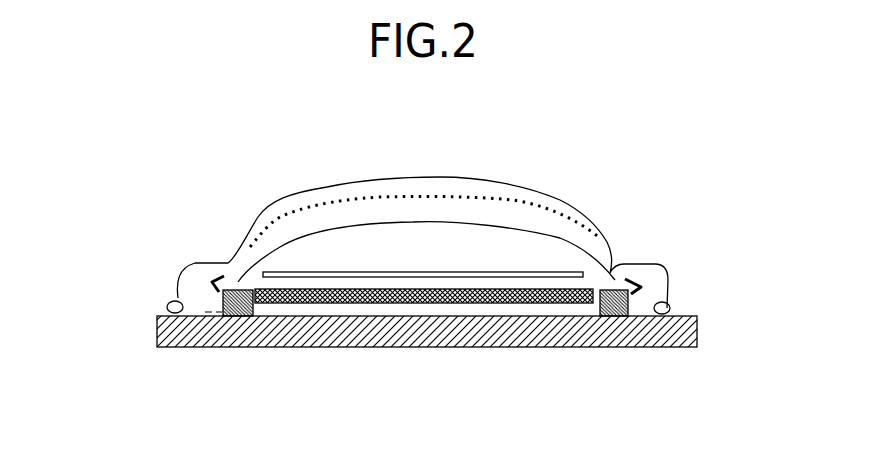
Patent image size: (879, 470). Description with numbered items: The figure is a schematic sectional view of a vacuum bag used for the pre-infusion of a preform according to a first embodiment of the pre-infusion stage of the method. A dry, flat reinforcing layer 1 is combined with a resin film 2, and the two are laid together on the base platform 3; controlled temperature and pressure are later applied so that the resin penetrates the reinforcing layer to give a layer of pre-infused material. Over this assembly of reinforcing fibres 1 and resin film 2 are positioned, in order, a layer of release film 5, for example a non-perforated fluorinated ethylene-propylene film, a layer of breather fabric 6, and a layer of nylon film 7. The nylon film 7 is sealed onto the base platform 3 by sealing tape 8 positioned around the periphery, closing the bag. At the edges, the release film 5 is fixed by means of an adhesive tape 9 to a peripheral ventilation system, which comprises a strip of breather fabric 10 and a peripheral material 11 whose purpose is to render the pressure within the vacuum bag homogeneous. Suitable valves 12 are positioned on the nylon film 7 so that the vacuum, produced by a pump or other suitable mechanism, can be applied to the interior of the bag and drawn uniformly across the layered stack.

The reinforcing layer 1 is at (428, 304).
The resin film 2 is at (418, 272).
The base platform 3 is at (637, 333).
The release film 5 is at (588, 252).
The breather fabric 6 is at (487, 200).
The nylon film 7 is at (327, 187).
The sealing tape 8 is at (670, 307).
The adhesive tape 9 is at (212, 279).
The strip of breather fabric 10 is at (597, 289).
The peripheral material 11 is at (223, 298).
The valves 12 is at (603, 288).